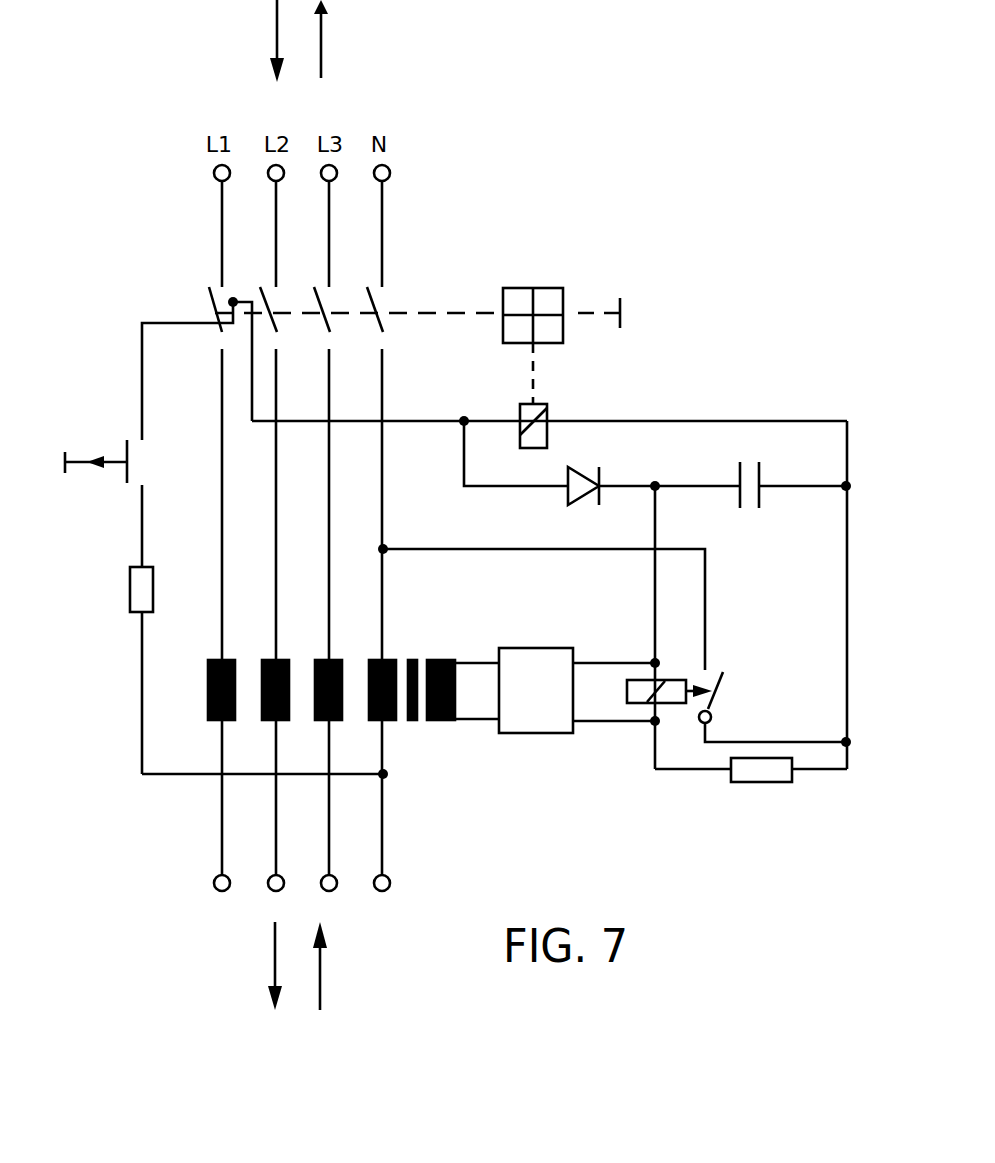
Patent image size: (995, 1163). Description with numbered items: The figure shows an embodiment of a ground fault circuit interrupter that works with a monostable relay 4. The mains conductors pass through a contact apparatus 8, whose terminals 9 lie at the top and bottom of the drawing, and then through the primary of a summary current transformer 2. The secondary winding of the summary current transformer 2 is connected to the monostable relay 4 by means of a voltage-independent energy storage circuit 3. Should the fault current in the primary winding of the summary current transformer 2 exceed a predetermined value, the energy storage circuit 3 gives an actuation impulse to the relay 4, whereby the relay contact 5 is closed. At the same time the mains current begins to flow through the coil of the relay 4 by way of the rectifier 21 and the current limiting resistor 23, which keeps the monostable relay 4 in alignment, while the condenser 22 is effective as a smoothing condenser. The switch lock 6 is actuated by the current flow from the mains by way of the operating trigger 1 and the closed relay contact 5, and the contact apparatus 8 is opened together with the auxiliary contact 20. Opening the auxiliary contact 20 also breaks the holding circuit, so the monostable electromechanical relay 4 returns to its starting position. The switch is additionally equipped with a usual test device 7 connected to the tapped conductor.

The trip release 1 is at (547, 413).
The summary current transformer 2 is at (208, 688).
The energy storage circuit 3 is at (553, 733).
The monostable relay 4 is at (672, 705).
The relay contact 5 is at (714, 706).
The switch lock 6 is at (547, 287).
The test device 7 is at (100, 472).
The contact apparatus 8 is at (209, 299).
The terminals 9 is at (390, 173).
The auxiliary contact 20 is at (232, 298).
The rectifier 21 is at (600, 471).
The condenser 22 is at (762, 475).
The current limiting resistor 23 is at (736, 782).